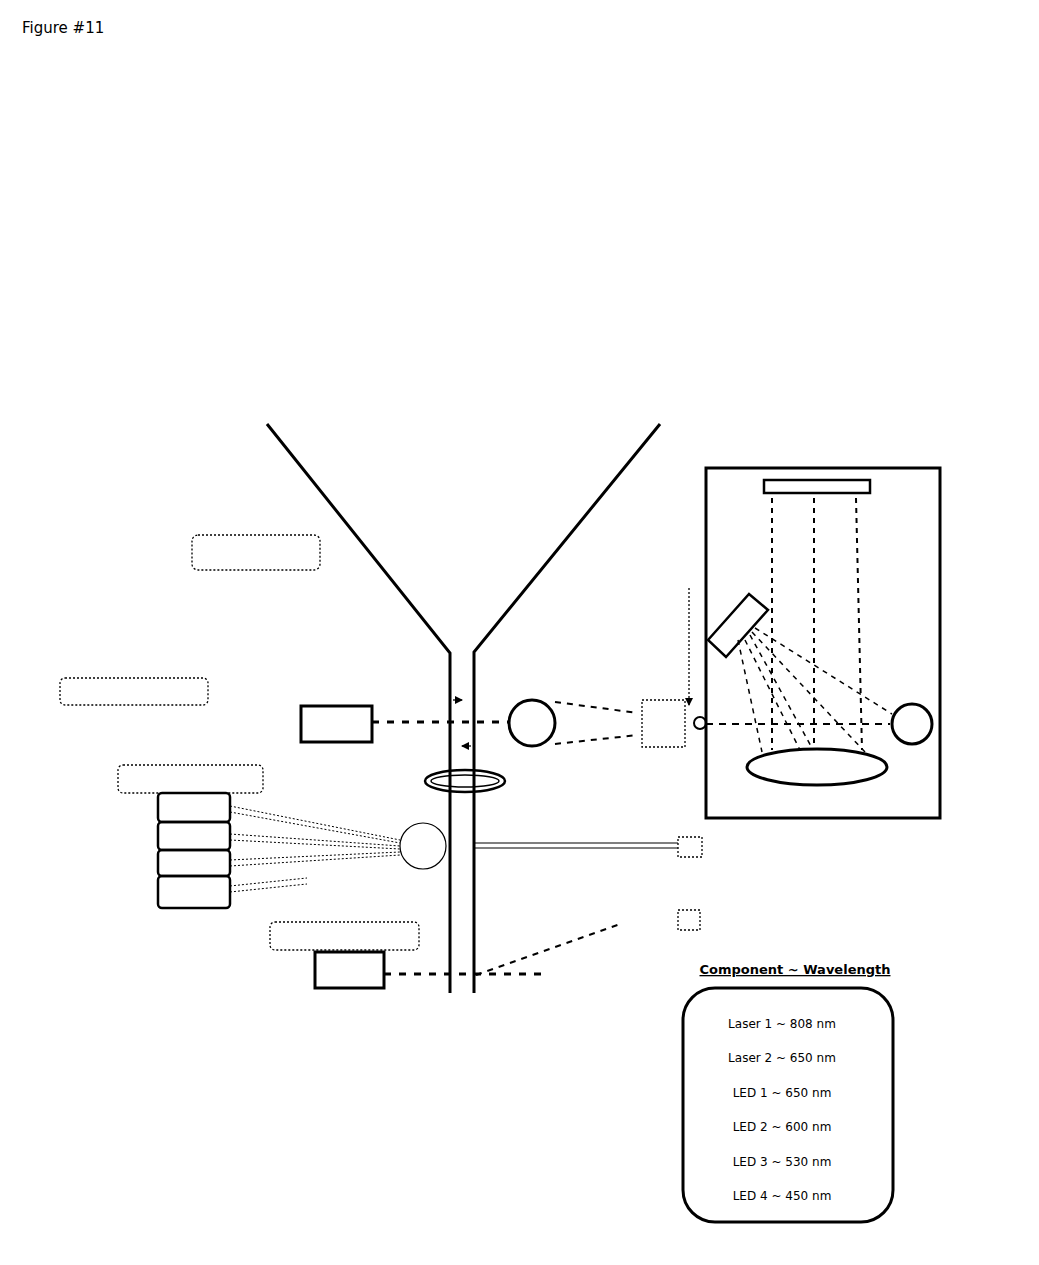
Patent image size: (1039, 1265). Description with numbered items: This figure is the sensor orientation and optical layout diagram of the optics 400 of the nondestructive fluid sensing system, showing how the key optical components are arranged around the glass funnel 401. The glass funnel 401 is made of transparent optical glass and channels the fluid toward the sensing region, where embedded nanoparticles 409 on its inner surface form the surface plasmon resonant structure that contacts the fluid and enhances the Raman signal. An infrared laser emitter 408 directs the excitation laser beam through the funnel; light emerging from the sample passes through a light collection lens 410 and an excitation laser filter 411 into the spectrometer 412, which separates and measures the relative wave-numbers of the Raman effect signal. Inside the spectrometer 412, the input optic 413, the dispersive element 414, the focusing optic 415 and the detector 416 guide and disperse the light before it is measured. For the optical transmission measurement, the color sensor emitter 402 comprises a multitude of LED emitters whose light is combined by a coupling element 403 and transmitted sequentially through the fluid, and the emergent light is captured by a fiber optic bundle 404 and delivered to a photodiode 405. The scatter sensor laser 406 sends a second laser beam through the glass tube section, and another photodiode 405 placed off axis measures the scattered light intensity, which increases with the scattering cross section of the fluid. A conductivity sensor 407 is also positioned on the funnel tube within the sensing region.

The optics 400 is at (501, 262).
The glass funnel 401 is at (448, 675).
The color sensor emitter 402 is at (190, 836).
The coupling element 403 is at (338, 854).
The fiber optic bundle 404 is at (576, 844).
The photodiode 405 is at (611, 900).
The scatter sensor laser 406 is at (407, 955).
The conductivity sensor 407 is at (411, 781).
The infrared laser emitter 408 is at (299, 722).
The embedded nanoparticles 409 is at (440, 706).
The light collection lens 410 is at (533, 697).
The excitation laser filter 411 is at (630, 651).
The spectrometer 412 is at (823, 643).
The spectrometer input optic 413 is at (912, 713).
The dispersive element 414 is at (800, 665).
The spectrometer focusing optic 415 is at (804, 768).
The spectrometer detector 416 is at (835, 615).